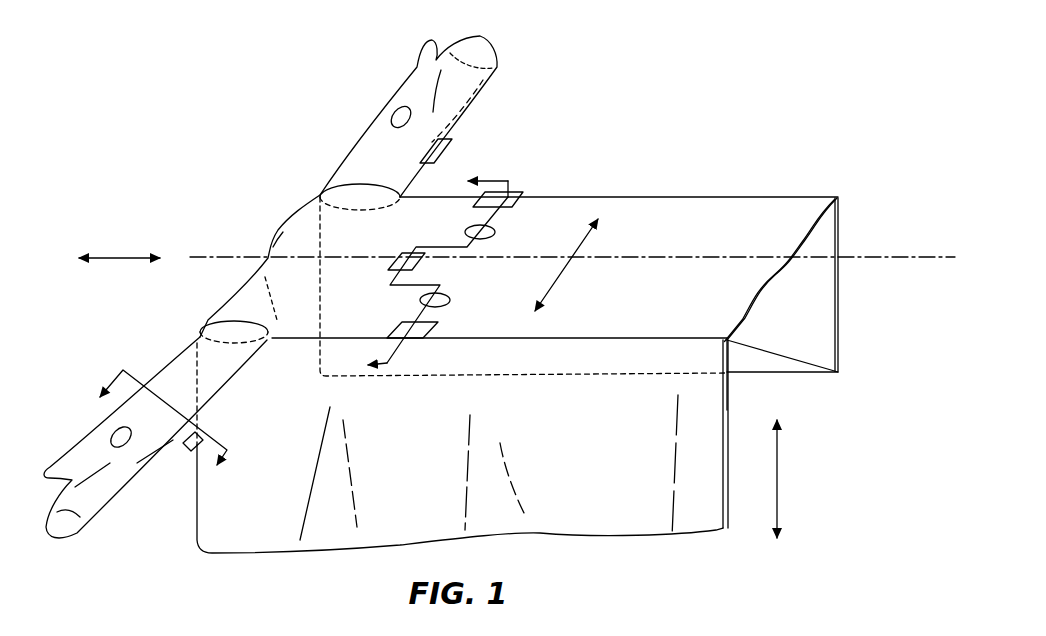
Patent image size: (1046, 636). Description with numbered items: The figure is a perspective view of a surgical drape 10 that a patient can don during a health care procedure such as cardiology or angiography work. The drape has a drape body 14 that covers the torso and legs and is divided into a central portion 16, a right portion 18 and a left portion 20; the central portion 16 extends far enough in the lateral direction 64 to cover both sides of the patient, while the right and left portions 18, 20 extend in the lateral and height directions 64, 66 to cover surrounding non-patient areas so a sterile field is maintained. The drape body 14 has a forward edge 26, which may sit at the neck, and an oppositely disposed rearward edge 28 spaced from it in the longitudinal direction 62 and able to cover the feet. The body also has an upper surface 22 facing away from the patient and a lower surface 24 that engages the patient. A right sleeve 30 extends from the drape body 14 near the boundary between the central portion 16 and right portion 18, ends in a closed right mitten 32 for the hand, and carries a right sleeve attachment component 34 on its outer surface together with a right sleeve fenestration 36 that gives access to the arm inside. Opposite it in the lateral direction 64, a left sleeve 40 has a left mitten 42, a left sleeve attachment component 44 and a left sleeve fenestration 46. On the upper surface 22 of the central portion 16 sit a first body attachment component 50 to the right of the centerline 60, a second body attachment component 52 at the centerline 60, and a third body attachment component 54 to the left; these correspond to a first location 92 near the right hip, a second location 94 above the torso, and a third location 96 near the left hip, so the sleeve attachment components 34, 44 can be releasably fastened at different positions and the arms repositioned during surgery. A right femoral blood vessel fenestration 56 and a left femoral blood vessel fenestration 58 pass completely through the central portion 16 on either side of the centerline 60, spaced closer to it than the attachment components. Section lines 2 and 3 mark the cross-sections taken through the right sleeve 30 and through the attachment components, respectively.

The surgical drape 10 is at (248, 108).
The drape body 14 is at (709, 304).
The central portion 16 is at (672, 226).
The right portion 18 is at (569, 504).
The left portion 20 is at (840, 320).
The upper surface 22 is at (797, 216).
The lower surface 24 is at (828, 348).
The forward edge 26 is at (272, 230).
The rearward edge 28 is at (812, 250).
The right sleeve 30 is at (231, 371).
The right mitten 32 is at (76, 530).
The right sleeve attachment component 34 is at (188, 444).
The right sleeve fenestration 36 is at (112, 436).
The left sleeve 40 is at (489, 92).
The left mitten 42 is at (496, 44).
The left sleeve attachment component 44 is at (441, 147).
The left sleeve fenestration 46 is at (398, 116).
The first body attachment component 50 is at (432, 331).
The second body attachment component 52 is at (396, 268).
The third body attachment component 54 is at (518, 194).
The right femoral blood vessel fenestration 56 is at (446, 299).
The left femoral blood vessel fenestration 58 is at (491, 232).
The centerline 60 is at (898, 257).
The longitudinal direction 62 is at (128, 258).
The lateral direction 64 is at (567, 284).
The height direction 66 is at (778, 452).
The first location 92 is at (412, 340).
The second location 94 is at (402, 256).
The third location 96 is at (508, 197).
The section line 2- 2 is at (159, 430).
The section line 3- 3 is at (426, 271).